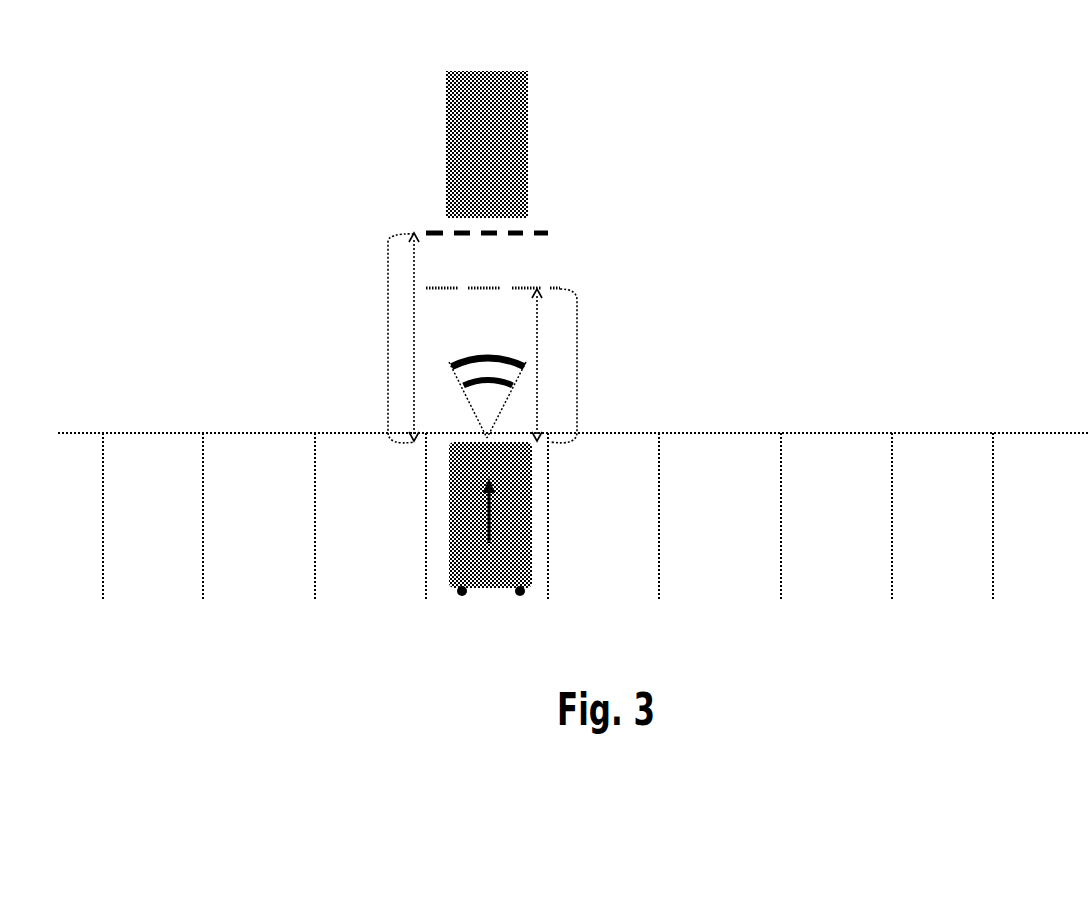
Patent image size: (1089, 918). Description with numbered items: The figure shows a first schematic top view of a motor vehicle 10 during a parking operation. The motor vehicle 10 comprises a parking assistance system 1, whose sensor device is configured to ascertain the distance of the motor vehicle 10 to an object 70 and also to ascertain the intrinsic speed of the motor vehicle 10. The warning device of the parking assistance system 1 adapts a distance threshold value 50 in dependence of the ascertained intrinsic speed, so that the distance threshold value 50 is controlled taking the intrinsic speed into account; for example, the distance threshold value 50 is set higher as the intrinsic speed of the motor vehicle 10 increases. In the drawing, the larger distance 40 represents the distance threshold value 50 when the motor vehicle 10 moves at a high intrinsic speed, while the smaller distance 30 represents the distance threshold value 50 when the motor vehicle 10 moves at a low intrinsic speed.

The parking assistance system 1 is at (532, 483).
The motor vehicle 10 is at (468, 593).
The distance 30 is at (585, 366).
The distance 40 is at (386, 340).
The distance threshold value 50 is at (561, 287).
The object 70 is at (529, 130).